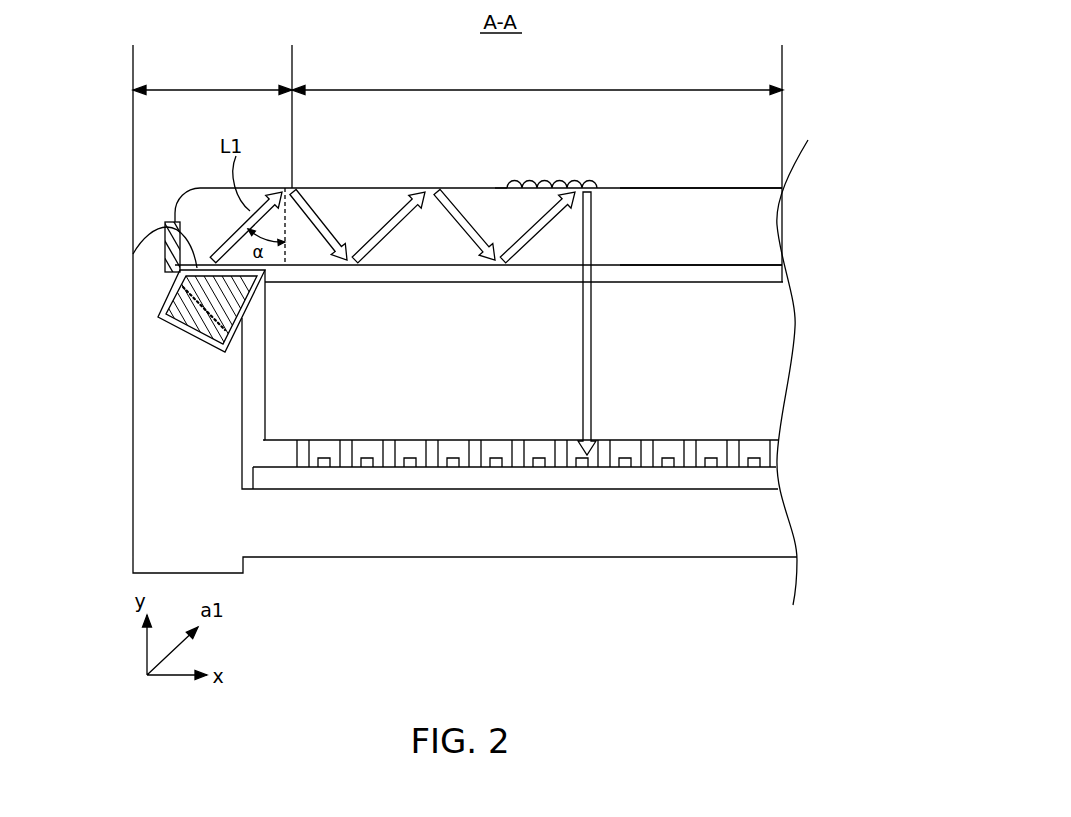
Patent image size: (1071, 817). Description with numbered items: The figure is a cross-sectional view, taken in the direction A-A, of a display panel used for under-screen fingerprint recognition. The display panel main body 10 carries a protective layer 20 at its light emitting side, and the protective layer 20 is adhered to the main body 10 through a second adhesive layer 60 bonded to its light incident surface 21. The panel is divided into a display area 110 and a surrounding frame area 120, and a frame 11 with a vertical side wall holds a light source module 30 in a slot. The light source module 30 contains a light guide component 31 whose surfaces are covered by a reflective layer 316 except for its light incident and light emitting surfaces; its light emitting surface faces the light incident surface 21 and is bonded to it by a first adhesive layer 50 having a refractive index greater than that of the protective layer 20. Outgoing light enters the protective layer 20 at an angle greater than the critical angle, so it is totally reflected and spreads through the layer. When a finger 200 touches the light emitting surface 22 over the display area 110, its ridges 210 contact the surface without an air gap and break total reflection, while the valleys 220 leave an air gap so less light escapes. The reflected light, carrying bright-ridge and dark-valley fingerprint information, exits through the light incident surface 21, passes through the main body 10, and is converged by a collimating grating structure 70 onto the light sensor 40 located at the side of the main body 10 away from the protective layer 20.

The display panel main body 10 is at (767, 397).
The frame 11 is at (147, 408).
The protective layer 20 is at (697, 198).
The light incident surface 21 is at (757, 259).
The light emitting surface 22 is at (757, 194).
The light source module 30 is at (163, 302).
The light guide component 31 is at (190, 318).
The reflective layer 316 is at (163, 306).
The light sensor 40 is at (748, 473).
The first adhesive layer 50 is at (164, 232).
The second adhesive layer 60 is at (737, 277).
The collimating grating structure 70 is at (773, 452).
The display area 110 is at (537, 76).
The frame area 120 is at (212, 116).
The finger 200 is at (603, 188).
The ridges 210 is at (510, 186).
The valleys 220 is at (548, 183).